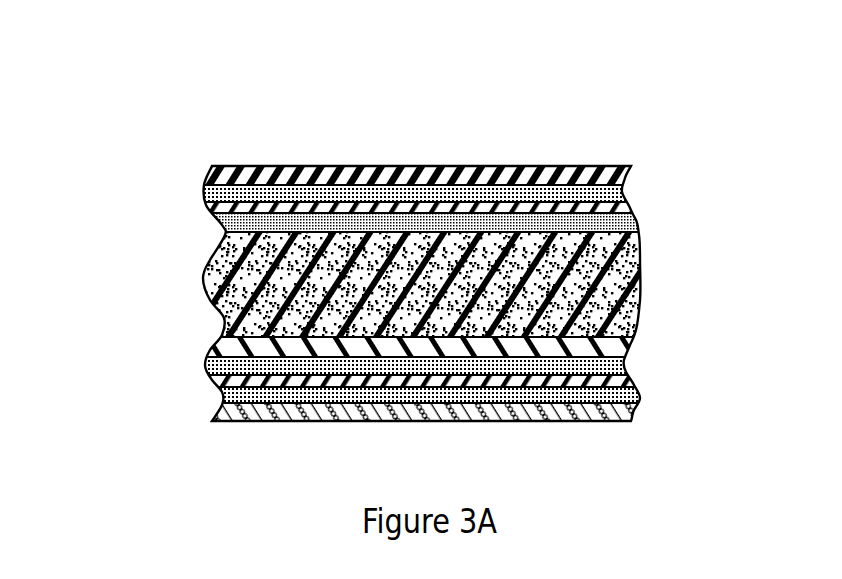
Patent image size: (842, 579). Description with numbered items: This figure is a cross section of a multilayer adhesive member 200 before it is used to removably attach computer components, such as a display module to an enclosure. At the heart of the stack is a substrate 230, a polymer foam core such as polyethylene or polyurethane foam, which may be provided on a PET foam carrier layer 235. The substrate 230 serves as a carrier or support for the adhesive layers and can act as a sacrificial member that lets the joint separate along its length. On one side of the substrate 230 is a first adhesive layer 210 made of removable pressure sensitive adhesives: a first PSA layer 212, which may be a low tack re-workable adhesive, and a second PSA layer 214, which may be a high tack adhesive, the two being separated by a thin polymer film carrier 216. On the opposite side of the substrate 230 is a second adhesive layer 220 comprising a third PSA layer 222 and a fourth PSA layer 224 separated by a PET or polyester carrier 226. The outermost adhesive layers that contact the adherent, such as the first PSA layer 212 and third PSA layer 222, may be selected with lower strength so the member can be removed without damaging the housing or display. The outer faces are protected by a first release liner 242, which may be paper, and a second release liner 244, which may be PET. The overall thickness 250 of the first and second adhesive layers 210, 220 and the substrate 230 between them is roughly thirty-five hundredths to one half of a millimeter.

The adhesive member 200 is at (677, 75).
The overall thickness 250 is at (107, 401).
The first adhesive layer 210 is at (189, 185).
The first PSA layer 212 is at (623, 192).
The carrier 216 is at (630, 210).
The second PSA layer 214 is at (640, 229).
The substrate 230 is at (189, 233).
The PET foam carrier layer 235 is at (628, 350).
The second adhesive layer 220 is at (189, 356).
The third PSA layer 222 is at (623, 362).
The carrier 226 is at (632, 380).
The fourth PSA layer 224 is at (640, 400).
The first release liner 242 is at (630, 172).
The second release liner 244 is at (633, 423).